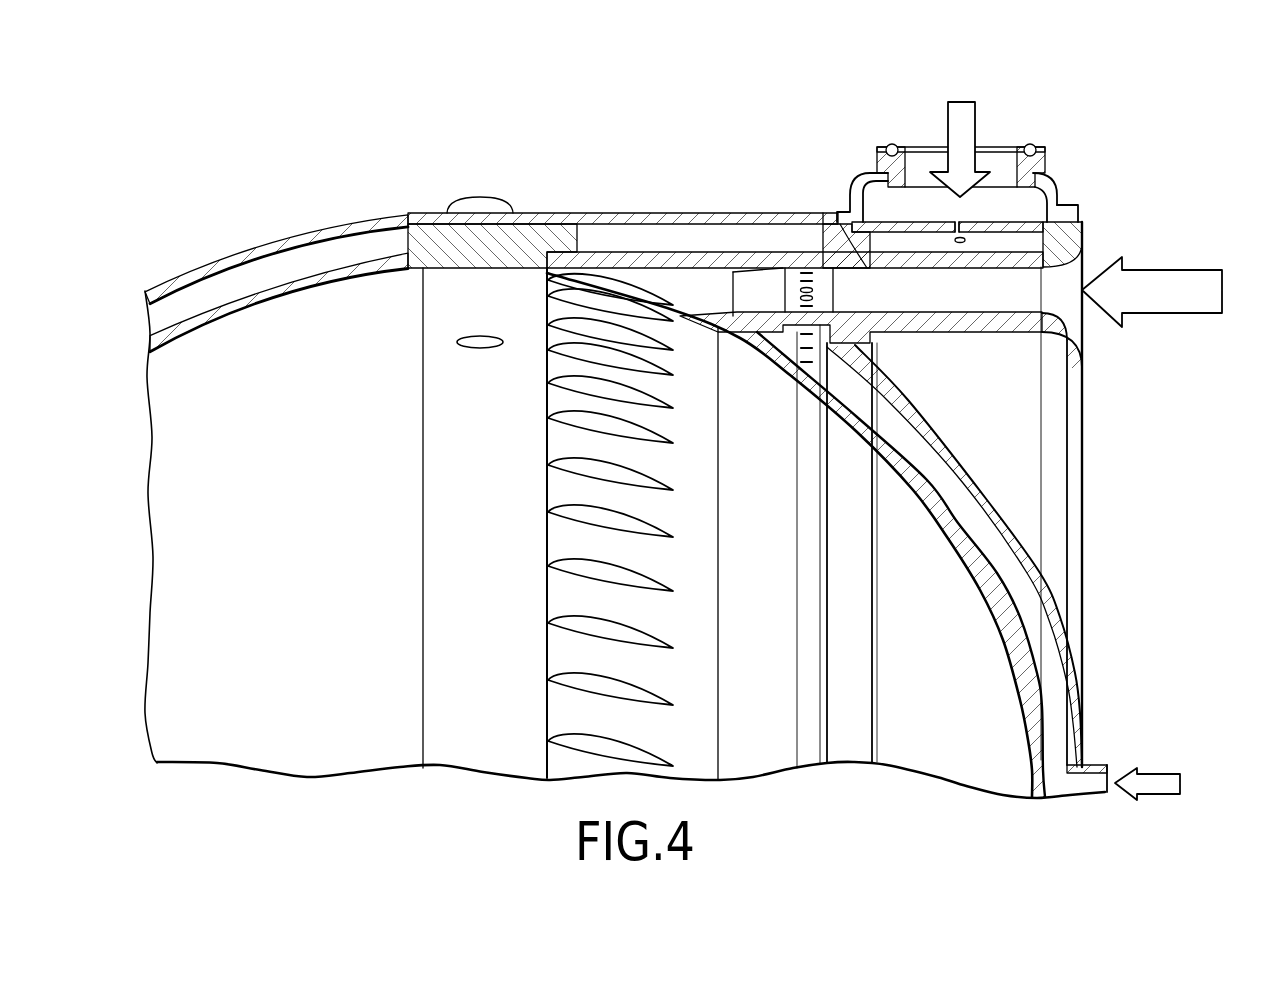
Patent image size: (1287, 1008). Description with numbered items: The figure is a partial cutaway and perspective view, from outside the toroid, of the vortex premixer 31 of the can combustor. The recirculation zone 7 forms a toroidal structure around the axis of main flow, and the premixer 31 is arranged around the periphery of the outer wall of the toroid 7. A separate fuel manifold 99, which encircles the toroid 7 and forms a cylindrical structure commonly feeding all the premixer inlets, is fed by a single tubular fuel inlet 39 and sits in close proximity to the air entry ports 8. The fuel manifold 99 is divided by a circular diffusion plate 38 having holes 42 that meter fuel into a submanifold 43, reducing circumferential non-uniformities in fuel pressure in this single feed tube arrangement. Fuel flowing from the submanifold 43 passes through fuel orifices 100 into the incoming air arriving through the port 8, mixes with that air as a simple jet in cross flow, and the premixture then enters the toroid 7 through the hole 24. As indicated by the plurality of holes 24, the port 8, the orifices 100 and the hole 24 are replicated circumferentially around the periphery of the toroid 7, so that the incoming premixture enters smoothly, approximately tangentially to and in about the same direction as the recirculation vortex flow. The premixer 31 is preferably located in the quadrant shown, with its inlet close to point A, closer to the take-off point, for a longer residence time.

The recirculation zone (toroid) 7 is at (279, 523).
The air entry port 8 is at (1065, 307).
The hole 24 is at (655, 580).
The vortex premixer 31 is at (1092, 212).
The circular diffusion (DP) plate 38 is at (1088, 210).
The tubular fuel inlet 39 is at (990, 157).
The holes 42 is at (963, 222).
The submanifold 43 is at (1028, 242).
The fuel manifold 99 is at (887, 203).
The fuel orifice (hole) 100 is at (842, 223).
The point A is at (1157, 786).